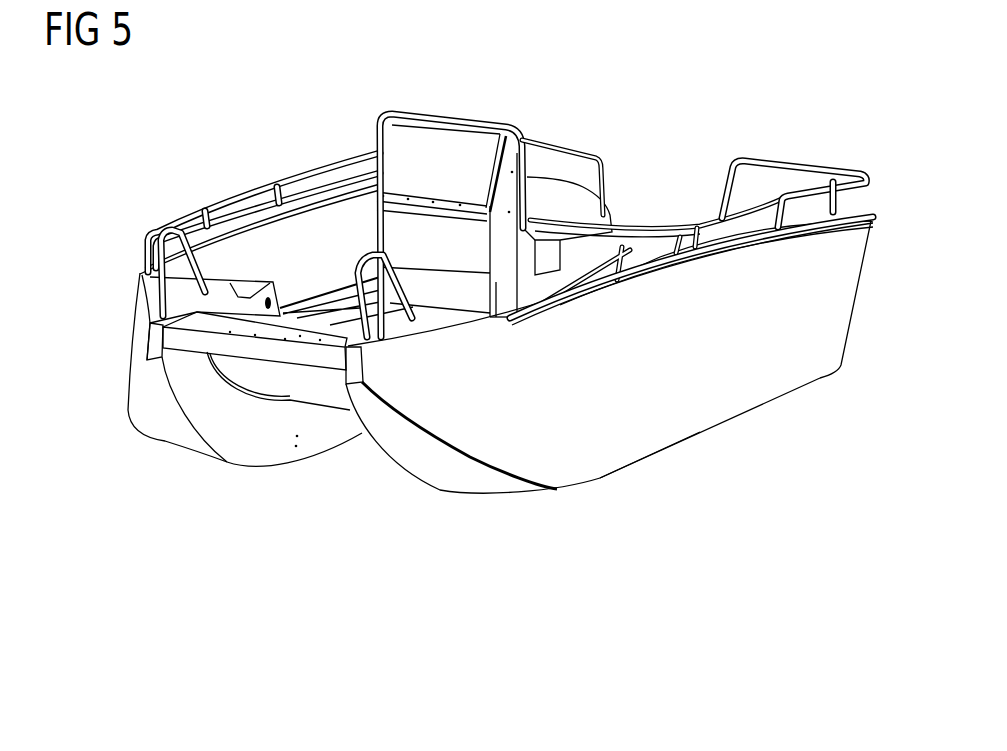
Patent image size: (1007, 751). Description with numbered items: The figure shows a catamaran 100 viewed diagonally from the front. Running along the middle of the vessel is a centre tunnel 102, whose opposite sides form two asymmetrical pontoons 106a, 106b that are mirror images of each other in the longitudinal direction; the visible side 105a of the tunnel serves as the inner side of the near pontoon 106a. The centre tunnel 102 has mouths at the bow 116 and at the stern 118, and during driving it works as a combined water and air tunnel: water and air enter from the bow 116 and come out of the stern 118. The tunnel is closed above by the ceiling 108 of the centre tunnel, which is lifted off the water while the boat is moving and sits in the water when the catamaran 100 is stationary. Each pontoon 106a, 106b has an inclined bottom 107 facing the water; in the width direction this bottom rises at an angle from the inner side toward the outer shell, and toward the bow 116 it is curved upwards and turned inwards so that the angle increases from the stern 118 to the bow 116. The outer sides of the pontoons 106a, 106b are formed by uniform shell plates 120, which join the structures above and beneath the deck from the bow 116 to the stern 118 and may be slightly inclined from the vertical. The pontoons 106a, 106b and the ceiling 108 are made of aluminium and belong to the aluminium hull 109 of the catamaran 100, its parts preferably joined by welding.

The catamaran 100 is at (648, 596).
The centre tunnel 102 is at (235, 490).
The side of the centre tunnel 105a is at (277, 447).
The pontoon 106a is at (152, 410).
The pontoon 106b is at (418, 468).
The inclined bottom 107 is at (167, 423).
The ceiling of the centre tunnel 108 is at (322, 385).
The hull 109 is at (662, 488).
The bow 116 is at (260, 140).
The stern 118 is at (684, 100).
The shell plate 120 is at (138, 337).